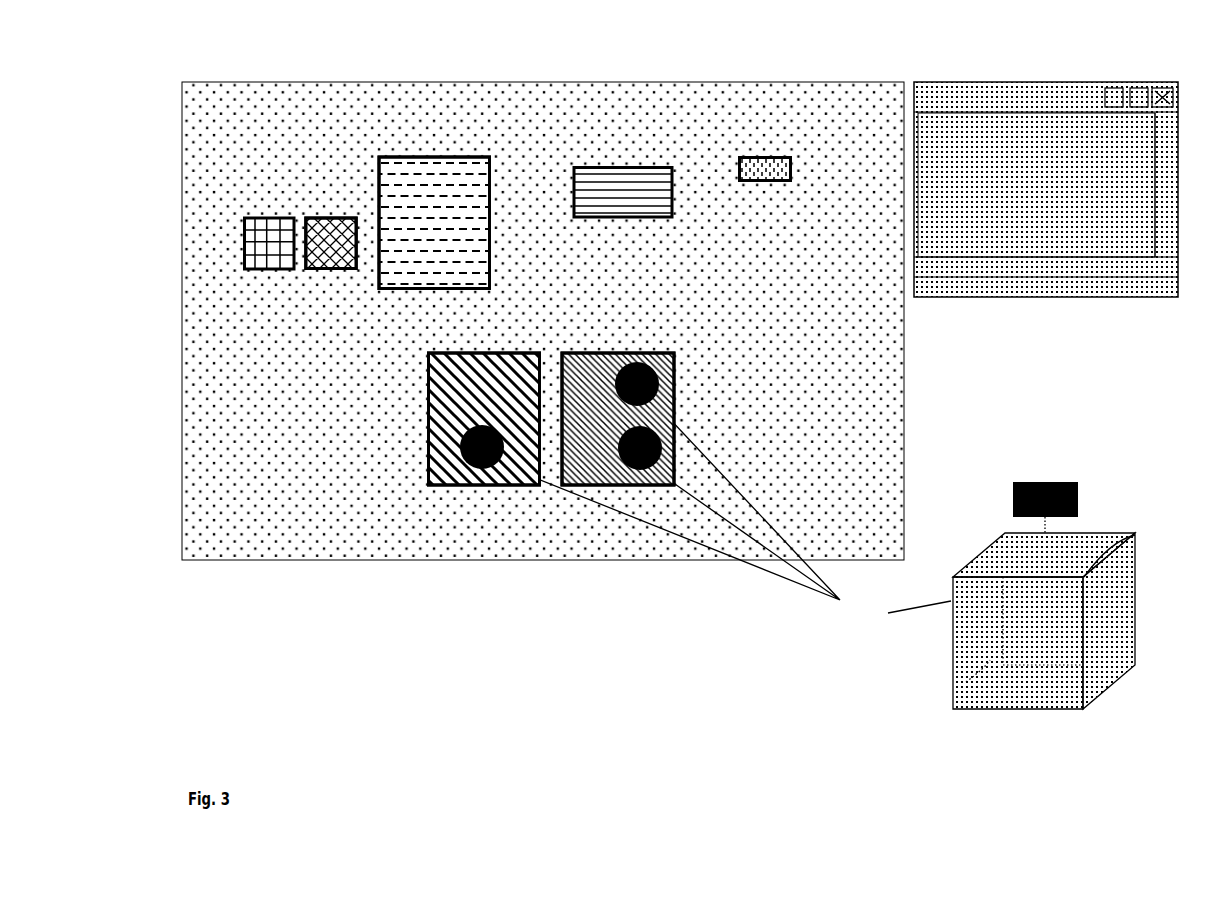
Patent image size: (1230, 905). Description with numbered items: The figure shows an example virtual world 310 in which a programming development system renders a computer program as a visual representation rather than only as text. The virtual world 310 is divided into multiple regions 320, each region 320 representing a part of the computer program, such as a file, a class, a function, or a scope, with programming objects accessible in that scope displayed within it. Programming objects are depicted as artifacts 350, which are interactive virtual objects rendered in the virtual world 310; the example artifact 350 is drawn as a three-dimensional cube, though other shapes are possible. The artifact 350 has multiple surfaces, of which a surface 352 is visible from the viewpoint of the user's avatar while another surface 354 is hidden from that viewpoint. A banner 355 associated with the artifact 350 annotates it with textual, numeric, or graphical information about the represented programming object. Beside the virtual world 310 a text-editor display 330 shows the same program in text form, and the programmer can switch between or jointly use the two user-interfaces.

The virtual world 310 is at (232, 70).
The region 320 is at (620, 352).
The text-editor display 330 is at (986, 68).
The artifact 350 is at (729, 512).
The surface 352 is at (966, 682).
The surface 354 is at (1083, 542).
The banner 355 is at (1033, 510).